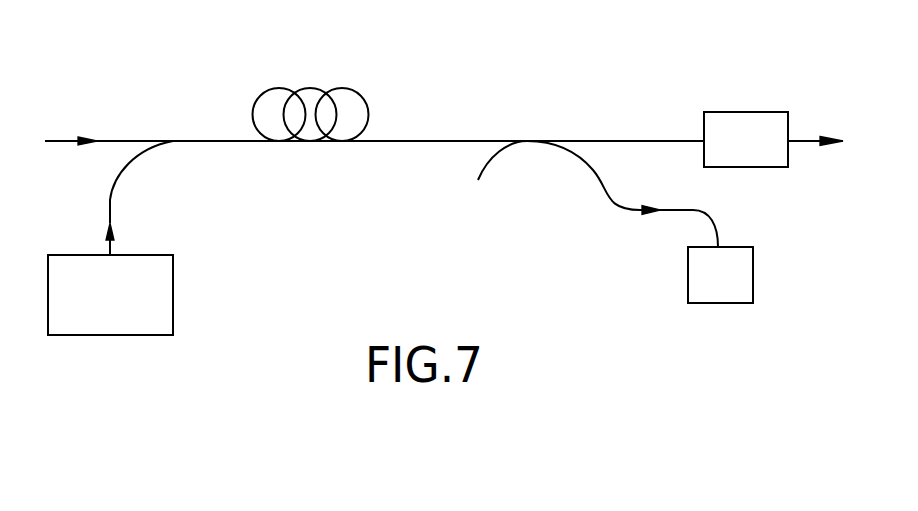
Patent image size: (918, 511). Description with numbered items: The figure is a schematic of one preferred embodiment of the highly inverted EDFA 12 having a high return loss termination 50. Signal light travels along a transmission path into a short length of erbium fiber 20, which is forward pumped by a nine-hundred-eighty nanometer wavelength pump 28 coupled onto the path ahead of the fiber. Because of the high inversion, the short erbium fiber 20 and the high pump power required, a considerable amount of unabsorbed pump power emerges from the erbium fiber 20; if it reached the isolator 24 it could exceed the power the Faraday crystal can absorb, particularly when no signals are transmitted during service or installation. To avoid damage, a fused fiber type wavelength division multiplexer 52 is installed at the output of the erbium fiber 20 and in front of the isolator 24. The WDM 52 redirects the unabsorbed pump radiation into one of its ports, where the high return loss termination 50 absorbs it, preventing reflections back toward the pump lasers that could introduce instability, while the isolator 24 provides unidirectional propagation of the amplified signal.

The EDFA section 12 is at (440, 72).
The erbium fiber 20 is at (300, 142).
The isolator 24 is at (733, 112).
The 980 nm wavelength pump 28 is at (173, 290).
The high return loss termination 50 is at (688, 277).
The fused fiber type wavelength division multiplexer 52 is at (532, 128).